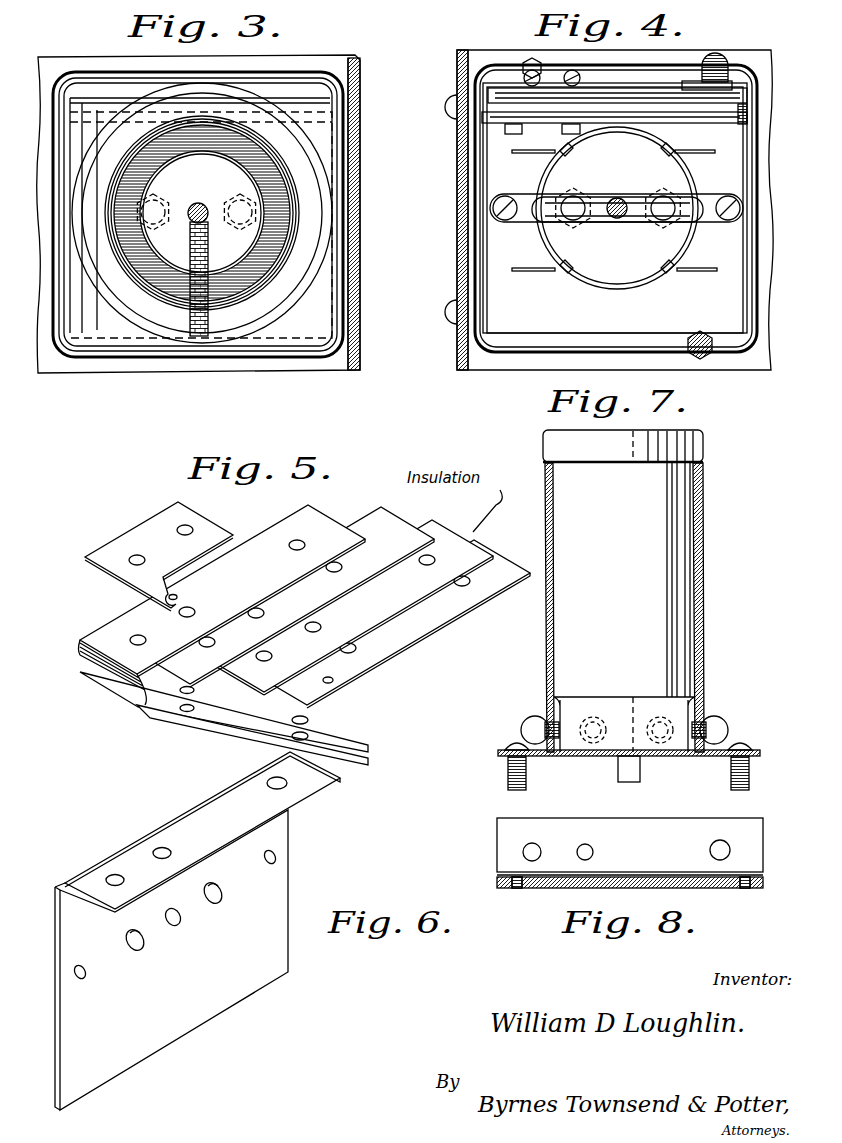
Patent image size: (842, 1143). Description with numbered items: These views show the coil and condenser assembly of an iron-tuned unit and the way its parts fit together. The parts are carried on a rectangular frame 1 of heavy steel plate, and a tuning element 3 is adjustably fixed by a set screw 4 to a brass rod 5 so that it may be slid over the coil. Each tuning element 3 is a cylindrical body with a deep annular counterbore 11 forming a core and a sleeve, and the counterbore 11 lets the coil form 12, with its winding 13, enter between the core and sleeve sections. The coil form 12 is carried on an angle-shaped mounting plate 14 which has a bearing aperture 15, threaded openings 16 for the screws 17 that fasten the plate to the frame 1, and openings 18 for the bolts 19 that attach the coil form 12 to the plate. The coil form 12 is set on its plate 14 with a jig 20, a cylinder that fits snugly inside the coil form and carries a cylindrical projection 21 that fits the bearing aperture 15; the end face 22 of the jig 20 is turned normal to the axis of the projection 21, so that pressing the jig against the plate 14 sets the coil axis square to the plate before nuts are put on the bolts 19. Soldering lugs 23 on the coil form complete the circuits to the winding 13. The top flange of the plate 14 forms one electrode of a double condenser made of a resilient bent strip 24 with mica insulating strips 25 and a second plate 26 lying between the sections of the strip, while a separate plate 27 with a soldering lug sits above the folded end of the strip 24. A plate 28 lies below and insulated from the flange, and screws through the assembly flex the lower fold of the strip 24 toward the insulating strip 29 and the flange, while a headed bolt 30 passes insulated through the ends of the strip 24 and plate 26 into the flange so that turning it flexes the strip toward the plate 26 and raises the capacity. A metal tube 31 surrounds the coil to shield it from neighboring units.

In FIG. 3, the rectangular frame 1 is at (357, 293).
In FIG. 4, the rectangular frame 1 is at (476, 180).
In FIG. 3, the tuning element 3 is at (130, 300).
In FIG. 3, the set screw 4 is at (212, 298).
In FIG. 3, the brass rod 5 is at (193, 222).
In FIG. 4, the brass rod 5 is at (621, 218).
In FIG. 3, the annular counterbore 11 is at (178, 290).
In FIG. 4, the coil form 12 is at (592, 192).
In FIG. 7, the coil form 12 is at (706, 607).
In FIG. 4, the winding 13 is at (690, 178).
In FIG. 3, the mounting plate 14 is at (305, 340).
In FIG. 4, the mounting plate 14 is at (525, 330).
In FIG. 6, the mounting plate 14 is at (280, 888).
In FIG. 8, the mounting plate 14 is at (548, 890).
In FIG. 6, the bearing aperture 15 is at (178, 922).
In FIG. 8, the bearing aperture 15 is at (633, 886).
In FIG. 6, the threaded opening 16 is at (220, 900).
In FIG. 3, the screw 17 is at (232, 202).
In FIG. 4, the screw 17 is at (573, 214).
In FIG. 6, the opening 18 is at (280, 857).
In FIG. 8, the opening 18 is at (517, 890).
In FIG. 4, the bolt 19 is at (497, 213).
In FIG. 7, the bolt 19 is at (507, 783).
In FIG. 7, the jig 20 is at (567, 641).
In FIG. 7, the cylindrical projection 21 is at (641, 776).
In FIG. 7, the end face 22 is at (593, 758).
In FIG. 4, the soldering lug 23 is at (532, 272).
In FIG. 7, the soldering lug 23 is at (526, 722).
In FIG. 4, the bent strip 24 is at (495, 115).
In FIG. 5, the bent strip 24 is at (80, 655).
In FIG. 5, the insulating strip 25 is at (397, 517).
In FIG. 4, the second plate 26 is at (642, 90).
In FIG. 5, the second plate 26 is at (452, 538).
In FIG. 4, the separate plate 27 is at (590, 88).
In FIG. 5, the separate plate 27 is at (152, 521).
In FIG. 4, the plate 28 is at (545, 128).
In FIG. 4, the insulating strip 29 is at (724, 108).
In FIG. 5, the insulating strip 29 is at (368, 762).
In FIG. 4, the headed bolt 30 is at (718, 62).
In FIG. 3, the shielding tube 31 is at (345, 330).
In FIG. 4, the shielding tube 31 is at (710, 356).